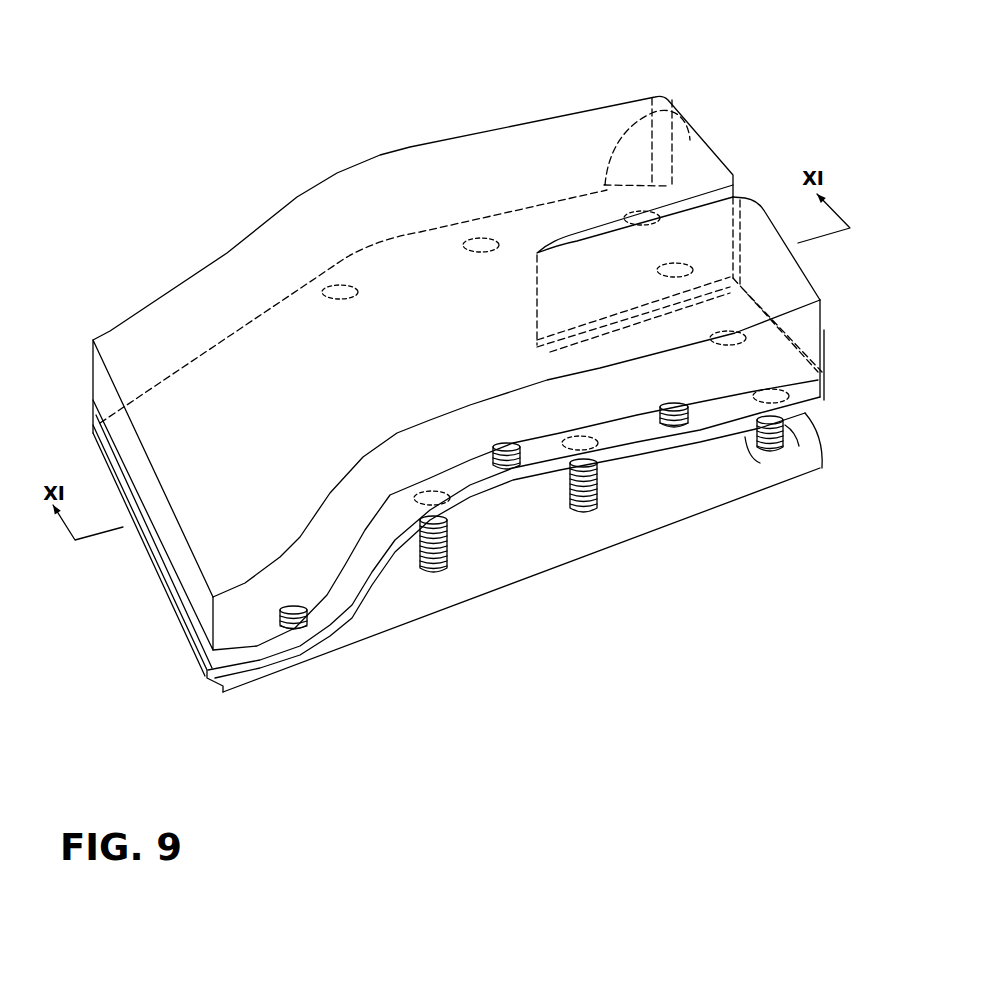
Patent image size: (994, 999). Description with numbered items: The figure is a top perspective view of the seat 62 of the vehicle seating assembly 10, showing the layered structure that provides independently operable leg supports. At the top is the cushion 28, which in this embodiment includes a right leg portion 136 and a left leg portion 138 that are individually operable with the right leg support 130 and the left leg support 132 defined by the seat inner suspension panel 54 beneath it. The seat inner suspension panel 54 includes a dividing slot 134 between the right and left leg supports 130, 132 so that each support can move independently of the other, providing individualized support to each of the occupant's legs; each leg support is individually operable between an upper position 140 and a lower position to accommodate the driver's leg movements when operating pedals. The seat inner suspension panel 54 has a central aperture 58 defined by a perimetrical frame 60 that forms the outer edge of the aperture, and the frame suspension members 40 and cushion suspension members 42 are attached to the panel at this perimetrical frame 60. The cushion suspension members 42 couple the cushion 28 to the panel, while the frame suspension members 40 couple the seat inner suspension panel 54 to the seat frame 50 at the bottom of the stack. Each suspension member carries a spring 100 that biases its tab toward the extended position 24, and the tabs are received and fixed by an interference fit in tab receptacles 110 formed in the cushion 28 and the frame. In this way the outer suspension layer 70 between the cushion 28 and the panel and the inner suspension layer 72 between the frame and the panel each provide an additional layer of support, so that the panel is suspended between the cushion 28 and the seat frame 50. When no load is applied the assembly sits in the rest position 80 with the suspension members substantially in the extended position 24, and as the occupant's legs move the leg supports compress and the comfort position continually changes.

The vehicle seating assembly 10 is at (149, 180).
The cushion 28 is at (232, 272).
The seat 62 is at (341, 156).
The upper position 140 is at (499, 127).
The rest position 80 is at (598, 97).
The left leg portion 138 is at (605, 140).
The left leg support 132 is at (683, 103).
The dividing slot 134 is at (705, 165).
The right leg portion 136 is at (753, 230).
The right leg support 130 is at (805, 413).
The outer suspension layer 70 is at (801, 393).
The cushion suspension members 42 is at (529, 452).
The central aperture 58 is at (388, 558).
The inner suspension layer 72 is at (670, 450).
The perimetrical frame 60 is at (700, 470).
The seat inner suspension panel 54 is at (242, 667).
The seat frame 50 is at (300, 655).
The spring 100 is at (800, 437).
The tab receptacles 110 is at (767, 467).
The frame suspension members 40 is at (577, 518).
The extended position 24 is at (423, 587).